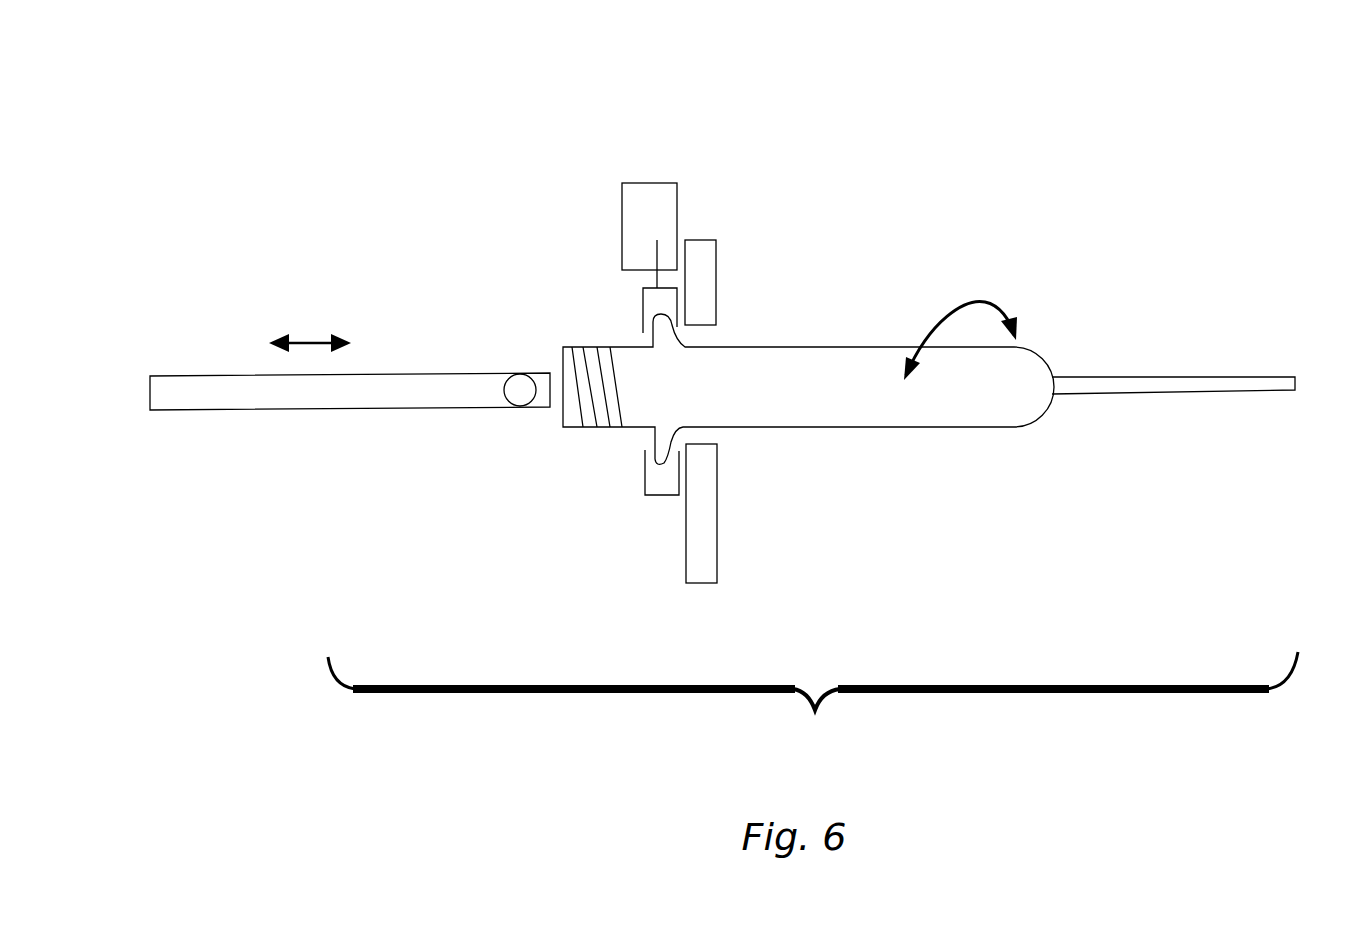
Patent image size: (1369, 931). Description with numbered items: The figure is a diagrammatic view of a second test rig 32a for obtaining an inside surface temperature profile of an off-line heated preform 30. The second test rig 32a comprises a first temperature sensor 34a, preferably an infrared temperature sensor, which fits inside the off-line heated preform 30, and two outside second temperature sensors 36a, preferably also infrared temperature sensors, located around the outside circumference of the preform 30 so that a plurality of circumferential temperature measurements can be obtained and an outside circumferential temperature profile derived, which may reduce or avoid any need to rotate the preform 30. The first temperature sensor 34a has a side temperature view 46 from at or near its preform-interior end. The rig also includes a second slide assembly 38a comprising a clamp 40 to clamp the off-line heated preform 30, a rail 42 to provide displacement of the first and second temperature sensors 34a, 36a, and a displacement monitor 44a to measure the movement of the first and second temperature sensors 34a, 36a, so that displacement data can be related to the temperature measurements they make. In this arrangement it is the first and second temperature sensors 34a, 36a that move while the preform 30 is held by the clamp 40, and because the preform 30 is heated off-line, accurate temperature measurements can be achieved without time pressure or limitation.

The off-line heated preform 30 is at (1040, 422).
The second test rig 32a is at (1116, 188).
The first temperature sensor 34a is at (379, 408).
The outside second temperature sensors 36a is at (718, 280).
The second slide assembly 38a is at (983, 694).
The clamp 40 is at (662, 497).
The rail 42 is at (1252, 373).
The displacement monitor 44a is at (647, 182).
The side temperature view 46 is at (518, 407).